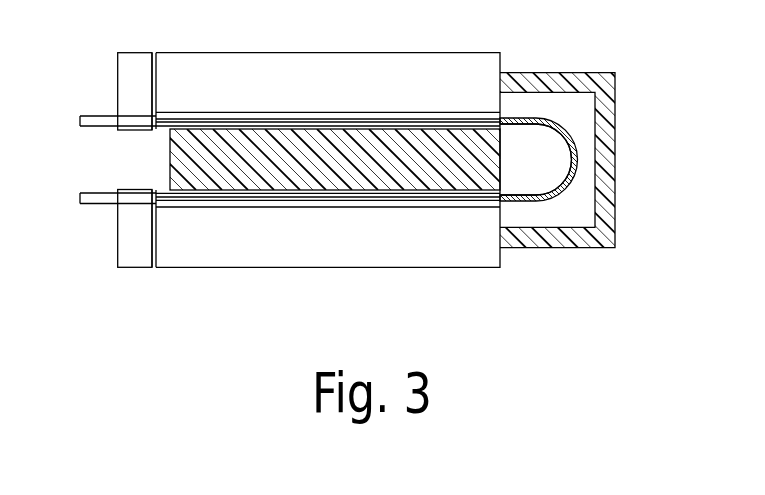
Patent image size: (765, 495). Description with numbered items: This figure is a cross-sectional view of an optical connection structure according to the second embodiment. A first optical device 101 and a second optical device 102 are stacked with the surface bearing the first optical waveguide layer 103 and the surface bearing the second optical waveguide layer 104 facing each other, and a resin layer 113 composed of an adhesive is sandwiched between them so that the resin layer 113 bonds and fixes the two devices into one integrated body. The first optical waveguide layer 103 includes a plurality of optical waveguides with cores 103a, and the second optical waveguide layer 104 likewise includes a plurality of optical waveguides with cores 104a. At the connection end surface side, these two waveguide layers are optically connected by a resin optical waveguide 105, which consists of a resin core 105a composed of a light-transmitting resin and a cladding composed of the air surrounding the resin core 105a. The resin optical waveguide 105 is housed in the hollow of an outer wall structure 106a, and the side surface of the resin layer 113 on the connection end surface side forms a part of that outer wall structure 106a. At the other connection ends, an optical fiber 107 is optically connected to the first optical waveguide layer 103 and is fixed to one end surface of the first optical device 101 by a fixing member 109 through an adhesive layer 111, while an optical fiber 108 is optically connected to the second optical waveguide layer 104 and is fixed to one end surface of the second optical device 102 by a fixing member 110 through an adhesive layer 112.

The first optical device 101 is at (386, 267).
The second optical device 102 is at (386, 55).
The first optical waveguide layer 103 is at (320, 207).
The cores 103a is at (450, 200).
The second optical waveguide layer 104 is at (323, 112).
The cores 104a is at (450, 122).
The resin optical waveguide 105 is at (545, 114).
The resin core 105a is at (535, 124).
The outer wall structure 106a is at (615, 205).
The optical fiber 107 is at (95, 204).
The optical fiber 108 is at (95, 116).
The fixing member 109 is at (118, 258).
The fixing member 110 is at (118, 63).
The adhesive layer 111 is at (153, 268).
The adhesive layer 112 is at (153, 53).
The resin layer 113 is at (478, 183).